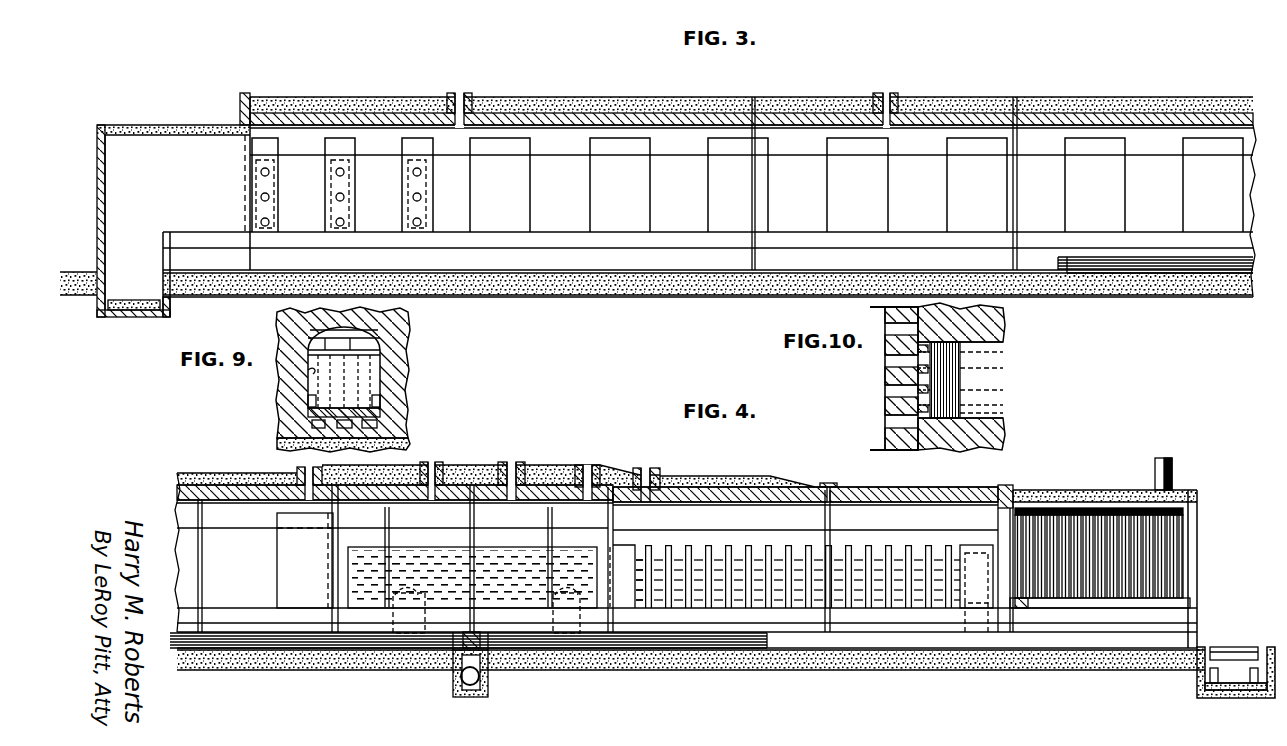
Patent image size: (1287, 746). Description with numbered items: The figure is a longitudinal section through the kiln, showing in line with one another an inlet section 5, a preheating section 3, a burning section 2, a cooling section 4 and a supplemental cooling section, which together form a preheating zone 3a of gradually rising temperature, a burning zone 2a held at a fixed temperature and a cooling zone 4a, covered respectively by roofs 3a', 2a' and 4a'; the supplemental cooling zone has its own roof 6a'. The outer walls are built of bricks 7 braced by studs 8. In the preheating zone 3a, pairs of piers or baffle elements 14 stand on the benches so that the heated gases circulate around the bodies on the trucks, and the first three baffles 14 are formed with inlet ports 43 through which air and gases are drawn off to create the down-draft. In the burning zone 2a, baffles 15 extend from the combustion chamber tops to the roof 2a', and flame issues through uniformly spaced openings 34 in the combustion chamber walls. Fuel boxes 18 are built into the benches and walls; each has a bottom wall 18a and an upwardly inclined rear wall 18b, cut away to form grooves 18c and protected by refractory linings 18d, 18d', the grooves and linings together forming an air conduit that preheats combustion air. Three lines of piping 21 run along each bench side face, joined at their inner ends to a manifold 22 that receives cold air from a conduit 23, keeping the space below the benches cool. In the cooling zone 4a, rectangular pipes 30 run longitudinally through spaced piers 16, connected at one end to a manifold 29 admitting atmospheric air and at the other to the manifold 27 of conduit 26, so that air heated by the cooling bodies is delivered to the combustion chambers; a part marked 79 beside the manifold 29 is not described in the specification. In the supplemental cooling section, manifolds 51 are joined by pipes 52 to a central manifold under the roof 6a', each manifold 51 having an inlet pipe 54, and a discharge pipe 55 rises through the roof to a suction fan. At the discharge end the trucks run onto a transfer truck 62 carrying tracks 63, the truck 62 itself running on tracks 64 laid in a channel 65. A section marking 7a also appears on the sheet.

In FIG. 4, the burning section 2 is at (418, 474).
In FIG. 4, the burning zone 2a is at (472, 558).
In FIG. 4, the roof of burning zone 2a' is at (497, 450).
In FIG. 3, the preheating section 3 is at (746, 102).
In FIG. 3, the preheating zone 3a is at (658, 211).
In FIG. 4, the preheating zone 3a is at (686, 552).
In FIG. 4, the roof of preheating zone 3a' is at (418, 466).
In FIG. 4, the cooling section 4 is at (805, 480).
In FIG. 4, the cooling zone 4a is at (805, 519).
In FIG. 4, the roof of cooling zone 4a' is at (737, 465).
In FIG. 3, the inlet section 5 is at (173, 206).
In FIG. 4, the roof of supplemental cooling zone 6a' is at (1129, 475).
In FIG. 3, the bricks of outer walls 7 is at (506, 316).
In FIG. 3, the section line 7a / foundation 7a is at (424, 316).
In FIG. 4, the section line 7a / foundation 7a is at (700, 660).
In FIG. 4, the studs 8 is at (1026, 695).
In FIG. 3, the baffle elements 14 is at (357, 148).
In FIG. 4, the baffle elements 14 is at (277, 586).
In FIG. 4, the baffles 15 is at (390, 517).
In FIG. 4, the baffle members 16 is at (733, 545).
In FIG. 9, the fuel boxes 18 is at (382, 379).
In FIG. 10, the fuel boxes 18 is at (1003, 342).
In FIG. 4, the fuel boxes 18 is at (380, 650).
In FIG. 9, the bottom wall of fuel box 18a is at (382, 404).
In FIG. 9, the rear wall of fuel box 18b is at (326, 370).
In FIG. 10, the rear wall of fuel box 18b is at (930, 395).
In FIG. 9, the grooves 18c is at (314, 424).
In FIG. 10, the grooves 18c is at (1003, 352).
In FIG. 9, the lining of bottom wall 18d is at (309, 396).
In FIG. 10, the lining of bottom wall 18d is at (1018, 382).
In FIG. 10, the lining of rear wall 18d' is at (996, 380).
In FIG. 3, the piping 21 is at (1212, 268).
In FIG. 4, the piping 21 is at (248, 650).
In FIG. 4, the manifold 22 is at (445, 650).
In FIG. 4, the conduit 23 is at (465, 697).
In FIG. 4, the air supply conduit 26 is at (622, 557).
In FIG. 4, the manifold 27 is at (623, 588).
In FIG. 4, the manifold 29 is at (970, 550).
In FIG. 4, the pipes 30 is at (878, 555).
In FIG. 9, the openings 34 is at (306, 340).
In FIG. 10, the openings 34 is at (900, 395).
In FIG. 3, the inlet ports 43 is at (433, 210).
In FIG. 4, the manifolds 51 is at (1190, 605).
In FIG. 4, the pipes 52 is at (1180, 535).
In FIG. 4, the inlet pipe 54 is at (1025, 606).
In FIG. 4, the discharge pipe 55 is at (1172, 472).
In FIG. 4, the transfer truck 62 is at (1235, 655).
In FIG. 4, the tracks on transfer truck 63 is at (1222, 648).
In FIG. 4, the tracks 64 is at (1205, 684).
In FIG. 4, the channel 65 is at (1215, 695).
In FIG. 4, the pocket passage 79 is at (968, 637).